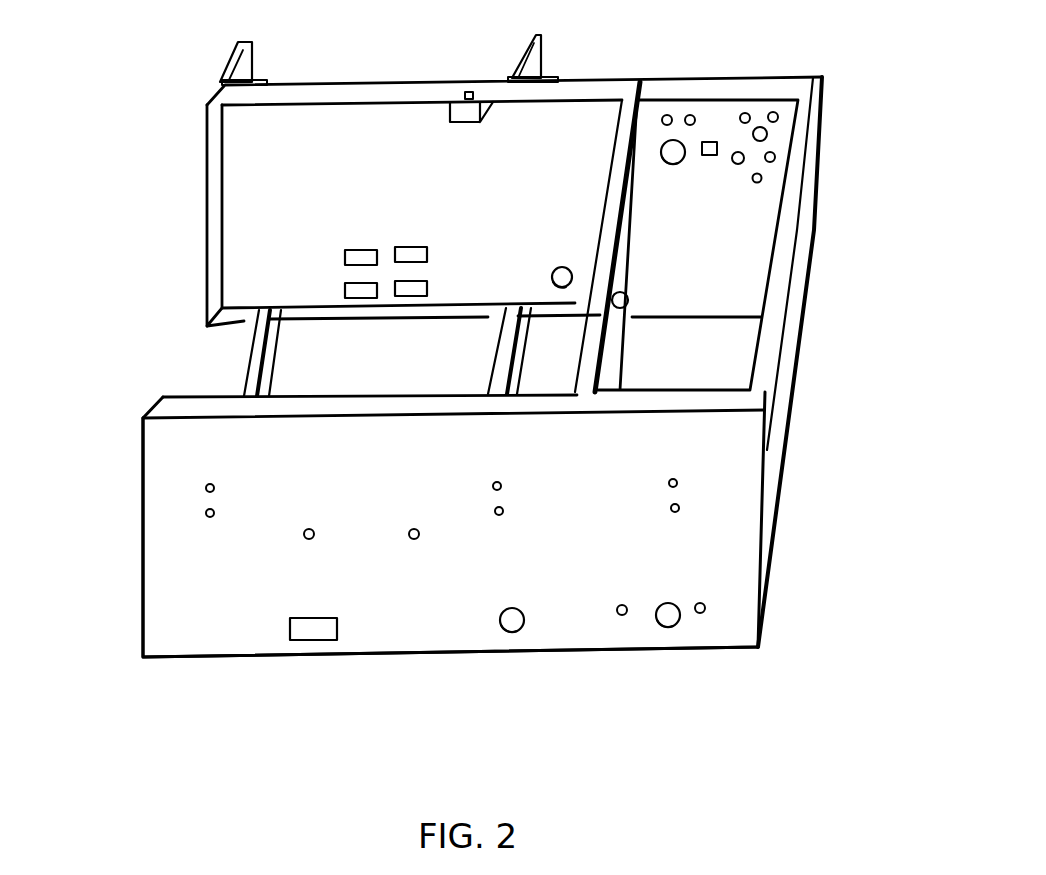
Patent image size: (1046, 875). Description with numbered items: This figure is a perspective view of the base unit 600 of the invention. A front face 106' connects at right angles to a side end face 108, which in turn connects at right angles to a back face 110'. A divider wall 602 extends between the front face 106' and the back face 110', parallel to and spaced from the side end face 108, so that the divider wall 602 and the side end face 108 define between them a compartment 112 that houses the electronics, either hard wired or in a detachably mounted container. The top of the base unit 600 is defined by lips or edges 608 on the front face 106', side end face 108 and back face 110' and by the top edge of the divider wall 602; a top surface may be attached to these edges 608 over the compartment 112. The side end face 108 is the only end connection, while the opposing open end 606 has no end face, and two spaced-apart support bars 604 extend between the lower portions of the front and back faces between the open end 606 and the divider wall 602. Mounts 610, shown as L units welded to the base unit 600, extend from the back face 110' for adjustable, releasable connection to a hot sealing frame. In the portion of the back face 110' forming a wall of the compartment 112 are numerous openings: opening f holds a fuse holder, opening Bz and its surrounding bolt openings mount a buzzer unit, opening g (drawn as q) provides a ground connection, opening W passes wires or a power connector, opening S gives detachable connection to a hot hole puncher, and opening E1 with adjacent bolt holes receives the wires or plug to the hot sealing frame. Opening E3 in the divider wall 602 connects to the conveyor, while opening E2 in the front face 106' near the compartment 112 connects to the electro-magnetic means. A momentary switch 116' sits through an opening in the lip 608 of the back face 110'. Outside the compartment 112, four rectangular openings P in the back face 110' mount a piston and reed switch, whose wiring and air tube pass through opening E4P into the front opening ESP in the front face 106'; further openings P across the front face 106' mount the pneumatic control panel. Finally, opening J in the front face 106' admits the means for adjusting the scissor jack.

The base unit 600 is at (168, 284).
The divider wall 602 is at (631, 100).
The support bars 604 is at (274, 358).
The open end 606 is at (193, 370).
The lips or edges 608 is at (375, 97).
The mounts 610 is at (253, 63).
The switch 116' is at (477, 80).
The back face 110' is at (414, 246).
The front face 106' is at (450, 537).
The side end face 108 is at (792, 348).
The compartment 112 is at (739, 245).
The openings P is at (691, 508).
The opening S is at (709, 136).
The opening E1 is at (672, 165).
The opening E2 is at (672, 628).
The opening E3 is at (644, 298).
The opening E4P is at (557, 266).
The front opening E5P ESP is at (512, 633).
The opening W is at (735, 166).
The opening Bz is at (768, 134).
The opening g q is at (776, 157).
The opening f is at (762, 179).
The opening J is at (320, 641).